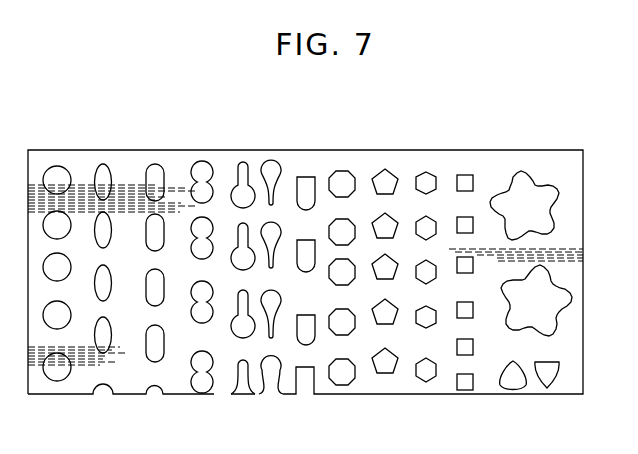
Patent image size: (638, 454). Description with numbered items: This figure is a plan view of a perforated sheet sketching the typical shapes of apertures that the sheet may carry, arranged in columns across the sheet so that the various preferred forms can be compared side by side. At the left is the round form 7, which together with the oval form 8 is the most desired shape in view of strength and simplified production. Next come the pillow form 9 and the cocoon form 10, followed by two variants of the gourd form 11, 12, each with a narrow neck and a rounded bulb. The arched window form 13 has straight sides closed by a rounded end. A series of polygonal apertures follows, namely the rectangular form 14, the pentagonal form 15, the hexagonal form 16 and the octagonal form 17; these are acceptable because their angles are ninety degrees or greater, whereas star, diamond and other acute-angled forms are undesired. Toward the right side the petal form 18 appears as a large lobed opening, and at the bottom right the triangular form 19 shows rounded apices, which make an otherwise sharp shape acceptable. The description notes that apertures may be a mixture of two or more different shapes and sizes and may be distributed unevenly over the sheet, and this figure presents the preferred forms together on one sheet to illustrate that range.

The round form aperture 7 is at (57, 381).
The oval form aperture 8 is at (103, 353).
The pillow form aperture 9 is at (160, 362).
The cocoon form aperture 10 is at (200, 385).
The gourd form aperture 11 is at (242, 165).
The gourd form aperture 12 is at (272, 162).
The arched window form aperture 13 is at (305, 176).
The rectangular form aperture 14 is at (342, 170).
The pentagonal form aperture 15 is at (385, 171).
The hexagonal form aperture 16 is at (426, 173).
The octagonal form aperture 17 is at (465, 176).
The petal form aperture 18 is at (526, 172).
The triangular form aperture with rounded apices 19 is at (547, 385).